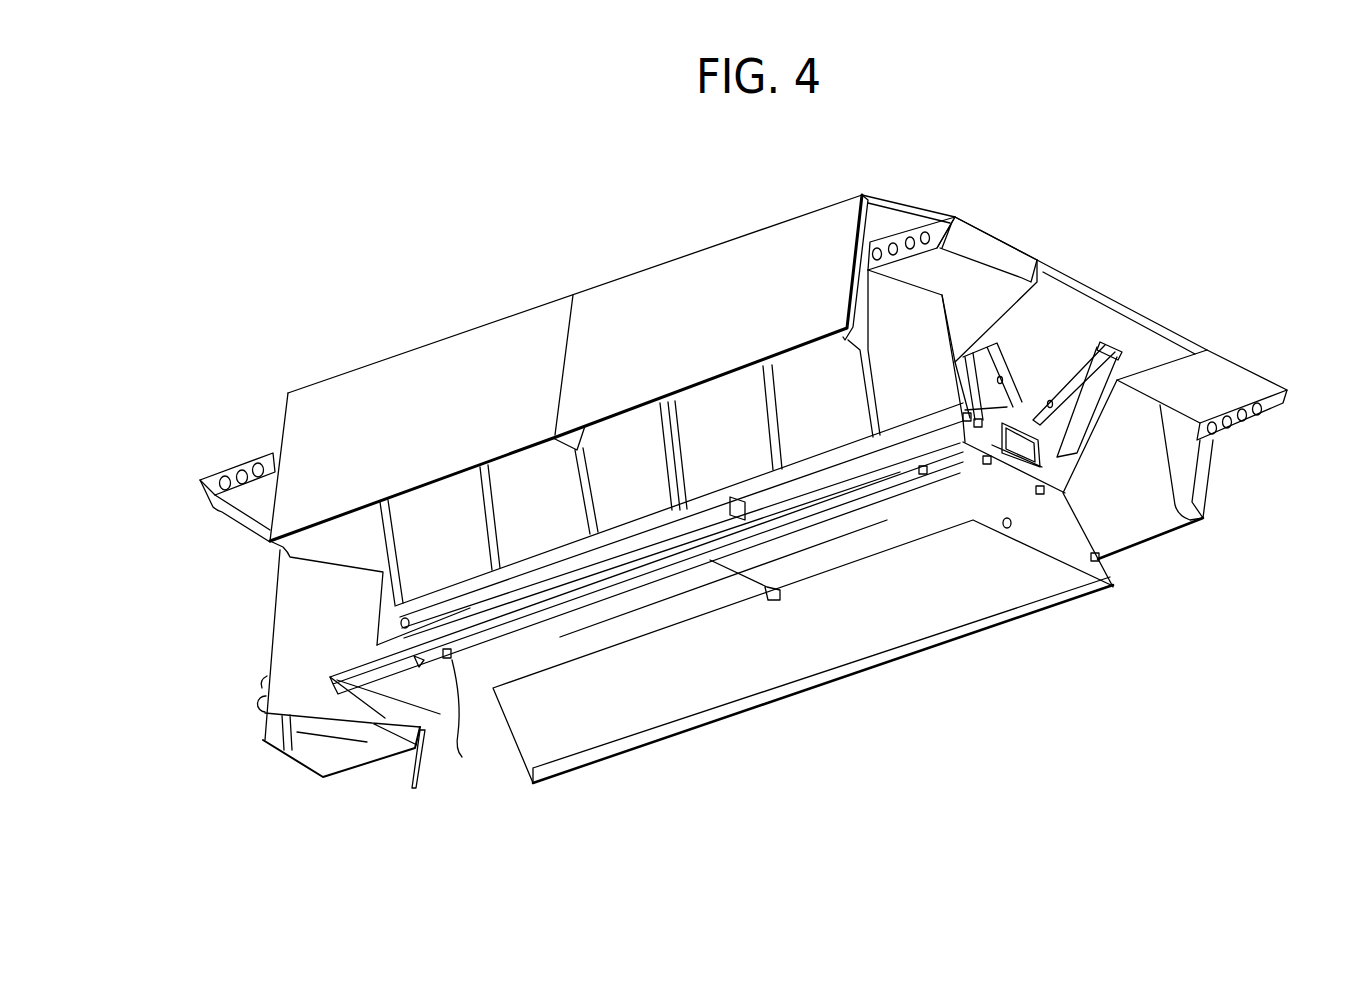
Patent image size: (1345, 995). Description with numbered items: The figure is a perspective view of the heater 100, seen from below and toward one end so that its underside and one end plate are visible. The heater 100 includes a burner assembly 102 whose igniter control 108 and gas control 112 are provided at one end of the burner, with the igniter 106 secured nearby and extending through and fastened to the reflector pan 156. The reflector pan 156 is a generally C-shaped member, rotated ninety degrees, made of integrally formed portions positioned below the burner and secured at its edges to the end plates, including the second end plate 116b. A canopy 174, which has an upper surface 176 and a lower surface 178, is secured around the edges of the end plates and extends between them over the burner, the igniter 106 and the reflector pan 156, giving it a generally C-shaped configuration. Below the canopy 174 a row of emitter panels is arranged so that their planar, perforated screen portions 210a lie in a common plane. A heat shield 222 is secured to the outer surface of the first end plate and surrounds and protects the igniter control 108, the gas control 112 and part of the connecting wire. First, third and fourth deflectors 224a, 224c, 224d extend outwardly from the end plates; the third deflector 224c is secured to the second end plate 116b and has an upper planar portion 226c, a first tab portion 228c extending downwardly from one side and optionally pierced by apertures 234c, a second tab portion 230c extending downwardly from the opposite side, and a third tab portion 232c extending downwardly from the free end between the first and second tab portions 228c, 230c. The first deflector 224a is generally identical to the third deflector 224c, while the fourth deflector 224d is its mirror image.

The heater 100 is at (632, 212).
The burner assembly 102 is at (340, 768).
The igniter 106 is at (457, 685).
The igniter control 108 is at (310, 727).
The gas control 112 is at (270, 723).
The second end plate 116b is at (1040, 352).
The reflector pan 156 is at (868, 605).
The canopy 174 is at (733, 237).
The upper surface of the canopy 176 is at (634, 362).
The lower surface of the canopy 178 is at (1143, 493).
The screen portion 210a is at (463, 550).
The heat shield 222 is at (290, 605).
The first deflector 224a is at (213, 477).
The third deflector 224c is at (958, 212).
The fourth deflector 224d is at (1240, 352).
The upper planar portion 226c is at (970, 240).
The first tab portion 228c is at (938, 230).
The second tab portion 230c is at (1008, 303).
The third tab portion 232c is at (1001, 250).
The apertures 234c is at (892, 243).